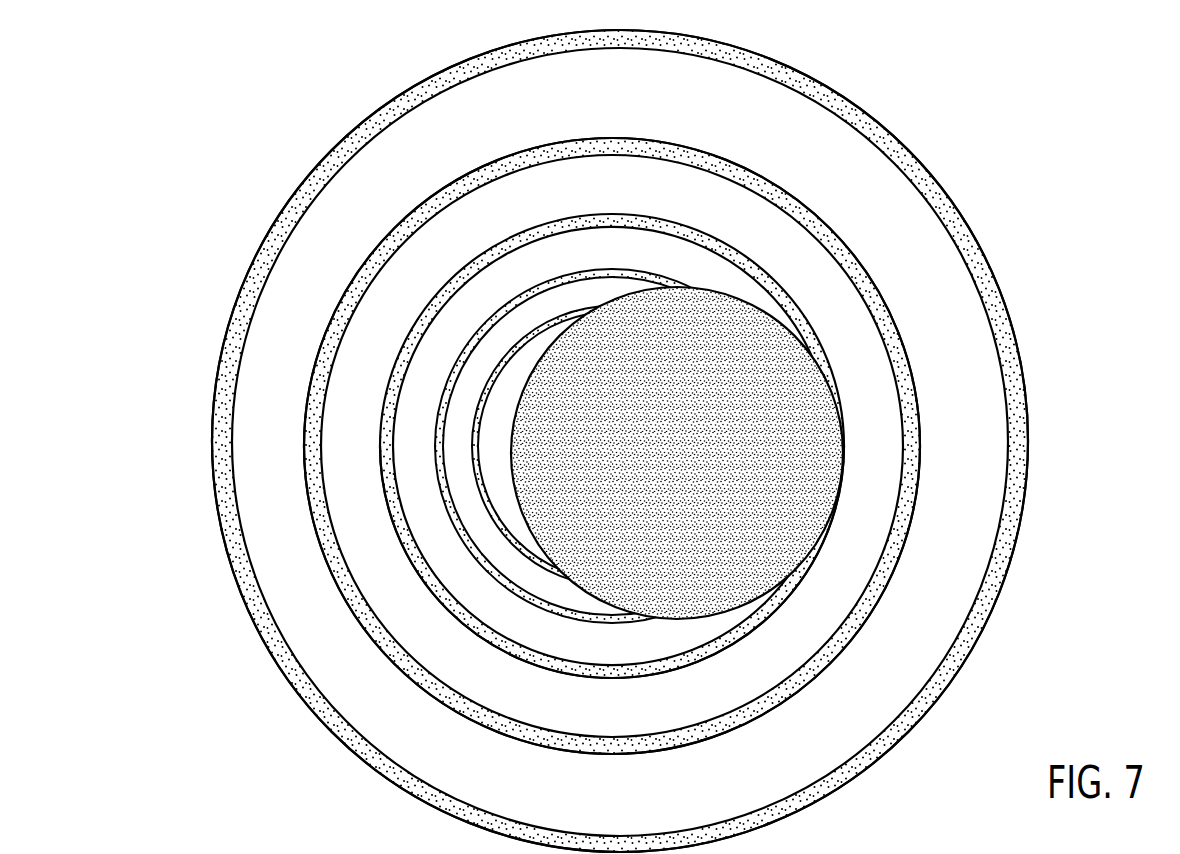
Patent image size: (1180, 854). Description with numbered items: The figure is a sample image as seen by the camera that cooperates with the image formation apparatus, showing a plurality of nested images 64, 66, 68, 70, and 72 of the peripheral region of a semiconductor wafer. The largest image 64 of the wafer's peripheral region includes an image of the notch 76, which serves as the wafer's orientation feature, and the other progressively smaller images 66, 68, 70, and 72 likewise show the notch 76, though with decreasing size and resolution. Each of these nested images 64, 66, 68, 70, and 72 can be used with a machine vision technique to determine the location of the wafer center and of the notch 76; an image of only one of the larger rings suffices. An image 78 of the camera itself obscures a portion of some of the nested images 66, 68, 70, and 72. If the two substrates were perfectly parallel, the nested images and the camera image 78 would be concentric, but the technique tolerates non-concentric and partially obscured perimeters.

The largest nested image 64 is at (923, 161).
The nested image 66 is at (794, 196).
The nested image 68 is at (705, 233).
The nested image 70 is at (628, 269).
The nested image 72 is at (577, 311).
The notch 76 is at (211, 434).
The image of the camera 78 is at (669, 620).